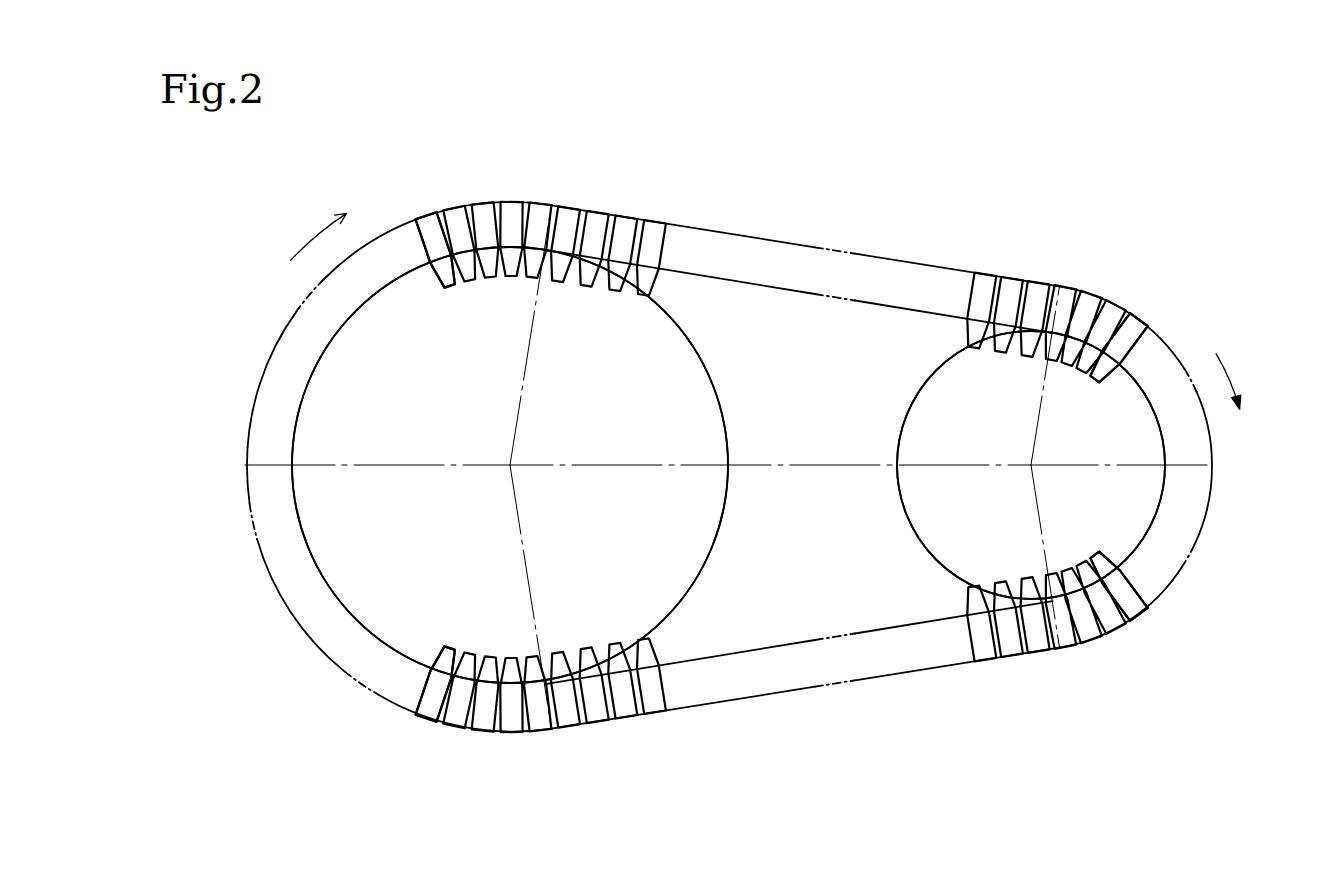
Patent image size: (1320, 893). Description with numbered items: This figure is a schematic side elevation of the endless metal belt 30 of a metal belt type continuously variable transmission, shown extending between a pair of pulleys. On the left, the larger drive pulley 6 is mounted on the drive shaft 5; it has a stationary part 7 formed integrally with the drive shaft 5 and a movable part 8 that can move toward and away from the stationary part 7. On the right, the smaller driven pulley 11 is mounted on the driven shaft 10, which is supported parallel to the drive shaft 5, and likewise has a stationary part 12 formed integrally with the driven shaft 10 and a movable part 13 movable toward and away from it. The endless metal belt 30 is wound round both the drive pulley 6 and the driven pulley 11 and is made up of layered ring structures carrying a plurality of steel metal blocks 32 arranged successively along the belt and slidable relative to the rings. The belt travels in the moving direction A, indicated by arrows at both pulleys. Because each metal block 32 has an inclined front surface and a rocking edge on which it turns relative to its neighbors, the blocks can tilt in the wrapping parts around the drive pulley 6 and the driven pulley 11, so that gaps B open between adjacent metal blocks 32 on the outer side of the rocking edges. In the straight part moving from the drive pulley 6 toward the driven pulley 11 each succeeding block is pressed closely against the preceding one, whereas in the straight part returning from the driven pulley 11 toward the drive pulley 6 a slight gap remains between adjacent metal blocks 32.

The drive pulley 6 is at (598, 138).
The endless metal belt 30 is at (815, 219).
The metal blocks 32 is at (665, 233).
The stationary part 7 is at (710, 370).
The movable part 8 is at (510, 465).
The drive shaft 5 is at (513, 465).
The driven pulley 11 is at (1103, 249).
The stationary part 12 is at (920, 390).
The movable part 13 is at (1031, 465).
The driven shaft 10 is at (1033, 465).
The moving direction A is at (786, 309).
The gaps B is at (440, 722).